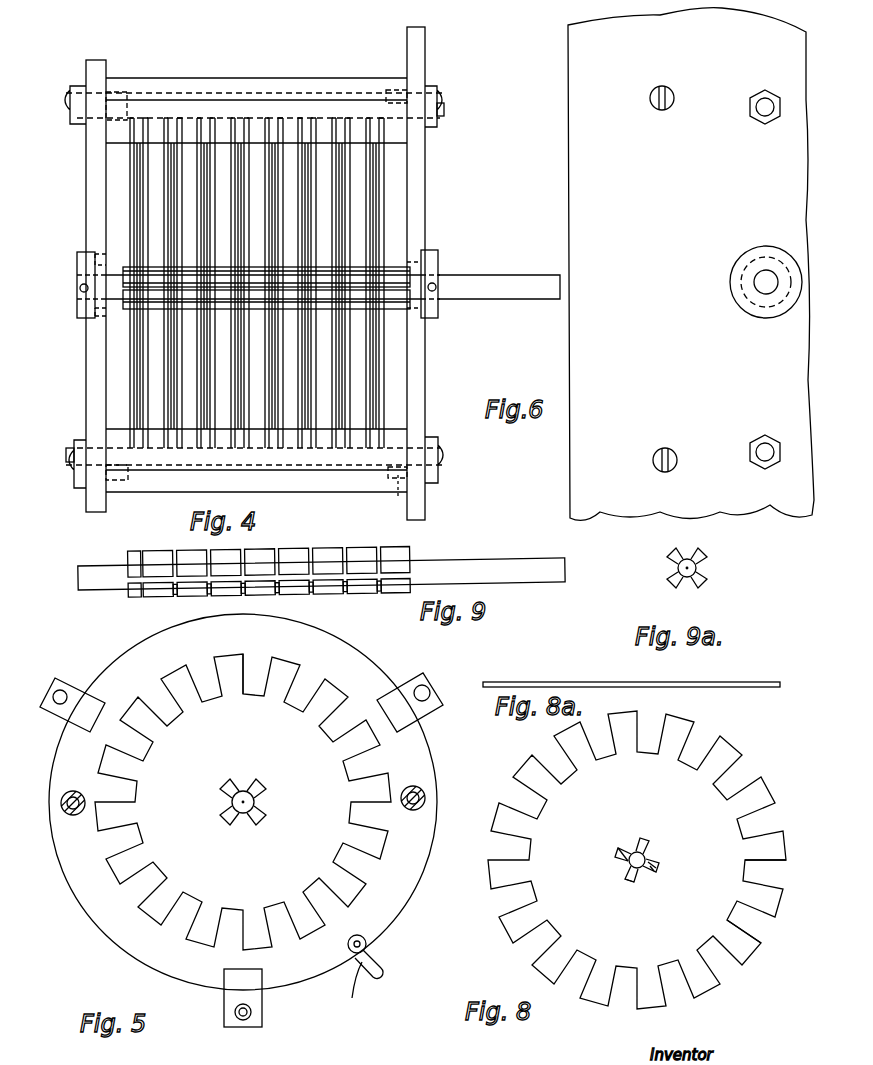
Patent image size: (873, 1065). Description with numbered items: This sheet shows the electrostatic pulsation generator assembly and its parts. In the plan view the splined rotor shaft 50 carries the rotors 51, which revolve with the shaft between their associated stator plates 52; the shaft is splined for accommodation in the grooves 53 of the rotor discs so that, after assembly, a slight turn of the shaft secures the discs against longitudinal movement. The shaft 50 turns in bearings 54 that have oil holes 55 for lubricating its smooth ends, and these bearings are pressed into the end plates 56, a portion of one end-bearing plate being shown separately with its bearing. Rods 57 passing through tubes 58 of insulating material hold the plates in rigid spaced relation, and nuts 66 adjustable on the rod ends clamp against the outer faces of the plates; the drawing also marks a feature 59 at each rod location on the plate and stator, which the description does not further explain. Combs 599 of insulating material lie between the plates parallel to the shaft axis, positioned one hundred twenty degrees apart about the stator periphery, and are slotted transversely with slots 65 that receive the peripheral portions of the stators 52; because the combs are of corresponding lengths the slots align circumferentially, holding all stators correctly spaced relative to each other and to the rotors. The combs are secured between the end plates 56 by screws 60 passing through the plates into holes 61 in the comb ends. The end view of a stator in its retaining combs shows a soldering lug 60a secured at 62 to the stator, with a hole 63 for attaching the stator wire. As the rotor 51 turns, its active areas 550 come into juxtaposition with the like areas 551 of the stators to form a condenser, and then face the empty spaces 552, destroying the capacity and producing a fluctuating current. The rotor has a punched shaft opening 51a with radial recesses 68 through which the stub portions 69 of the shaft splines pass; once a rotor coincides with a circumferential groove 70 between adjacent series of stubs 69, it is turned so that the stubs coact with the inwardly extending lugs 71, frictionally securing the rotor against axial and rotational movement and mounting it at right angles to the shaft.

In FIG. 4, the rotor shaft 50 is at (515, 293).
In FIG. 6, the rotor shaft 50 is at (775, 286).
In FIG. 9, the rotor shaft 50 is at (124, 590).
In FIG. 9A, the rotor shaft 50 is at (692, 567).
In FIG. 5, the rotor shaft 50 is at (232, 802).
In FIG. 4, the rotor member 51 is at (378, 408).
In FIG. 8A, the rotor member 51 is at (683, 688).
In FIG. 8, the rotor member 51 is at (583, 918).
In FIG. 8, the shaft opening 51a is at (635, 866).
In FIG. 4, the stator plate 52 is at (385, 208).
In FIG. 5, the stator plate 52 is at (408, 876).
In FIG. 4, the grooves 53 is at (438, 290).
In FIG. 4, the bearings 54 is at (84, 318).
In FIG. 6, the bearings 54 is at (760, 256).
In FIG. 4, the oil holes 55 is at (80, 288).
In FIG. 6, the oil holes 55 is at (754, 286).
In FIG. 8, the oil holes 55 is at (628, 858).
In FIG. 4, the end plate 56 is at (88, 213).
In FIG. 6, the end plate 56 is at (570, 183).
In FIG. 4, the rods 57 is at (440, 110).
In FIG. 8, the rods 57 is at (735, 818).
In FIG. 5, the tubes 58 is at (73, 816).
In FIG. 6, the hole 59 is at (758, 106).
In FIG. 5, the hole 59 is at (73, 797).
In FIG. 4, the screws 60 is at (431, 95).
In FIG. 6, the screws 60 is at (666, 470).
In FIG. 5, the soldering lug 60a is at (352, 992).
In FIG. 4, the holes 61 is at (399, 500).
In FIG. 5, the holes 61 is at (241, 1018).
In FIG. 5, the securing point 62 is at (367, 944).
In FIG. 5, the hole 63 is at (378, 977).
In FIG. 4, the slots 65 is at (386, 128).
In FIG. 6, the nuts 66 is at (762, 92).
In FIG. 8, the radial recesses 68 is at (652, 866).
In FIG. 9, the stub portions of the shaft splines 69 is at (135, 566).
In FIG. 9A, the stub portions of the shaft splines 69 is at (668, 584).
In FIG. 9, the circumferential grooves 70 is at (380, 598).
In FIG. 8, the circumferential grooves 70 is at (649, 845).
In FIG. 8, the inwardly extending lugs 71 is at (641, 880).
In FIG. 8, the active areas of the rotor 550 is at (745, 960).
In FIG. 5, the active areas of the stator 551 is at (372, 840).
In FIG. 5, the empty spaces of the stator 552 is at (275, 682).
In FIG. 4, the combs 599 is at (232, 104).
In FIG. 5, the combs 599 is at (66, 690).